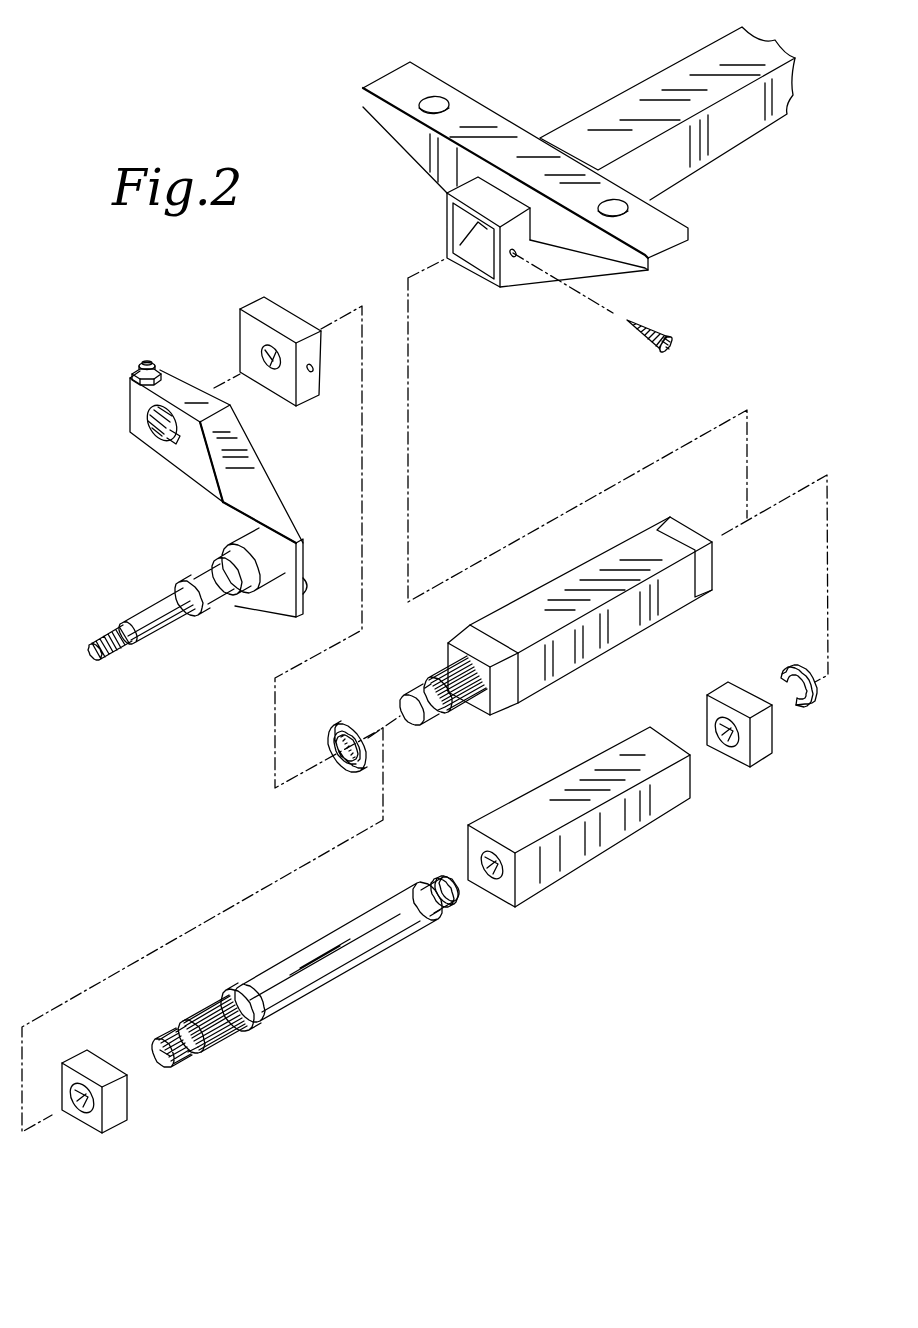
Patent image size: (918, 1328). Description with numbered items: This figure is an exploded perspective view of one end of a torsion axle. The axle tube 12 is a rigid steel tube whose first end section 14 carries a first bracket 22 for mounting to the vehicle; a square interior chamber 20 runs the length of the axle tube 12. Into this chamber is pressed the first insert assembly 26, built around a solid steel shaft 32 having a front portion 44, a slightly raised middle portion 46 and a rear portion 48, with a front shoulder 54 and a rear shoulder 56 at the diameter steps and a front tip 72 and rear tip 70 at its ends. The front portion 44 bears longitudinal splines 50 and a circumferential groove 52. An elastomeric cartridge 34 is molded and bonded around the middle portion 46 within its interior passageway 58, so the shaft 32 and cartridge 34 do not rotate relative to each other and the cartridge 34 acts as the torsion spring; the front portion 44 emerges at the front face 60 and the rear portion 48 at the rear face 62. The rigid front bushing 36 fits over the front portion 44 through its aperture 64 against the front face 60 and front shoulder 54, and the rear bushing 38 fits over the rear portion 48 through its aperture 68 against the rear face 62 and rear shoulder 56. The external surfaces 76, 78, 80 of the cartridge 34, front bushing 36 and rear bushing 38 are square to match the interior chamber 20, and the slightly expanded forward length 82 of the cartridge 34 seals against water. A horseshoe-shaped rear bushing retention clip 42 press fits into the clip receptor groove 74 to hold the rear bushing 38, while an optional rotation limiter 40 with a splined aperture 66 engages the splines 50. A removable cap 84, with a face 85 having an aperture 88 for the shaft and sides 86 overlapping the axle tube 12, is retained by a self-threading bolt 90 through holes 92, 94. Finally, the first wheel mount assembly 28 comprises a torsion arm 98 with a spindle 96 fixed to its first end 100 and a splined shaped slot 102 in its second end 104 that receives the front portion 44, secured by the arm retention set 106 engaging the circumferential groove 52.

The first end section 14 is at (203, 60).
The axle tube 12 is at (723, 138).
The first bracket 22 is at (417, 80).
The interior chamber 20 is at (455, 250).
The hole 94 is at (516, 260).
The self-threading bolt 90 is at (670, 335).
The cap 84 is at (259, 305).
The face 85 is at (238, 323).
The sides 86 is at (283, 313).
The aperture 88 is at (258, 354).
The hole 92 is at (310, 372).
The arm retention set 106 is at (146, 362).
The shaped slot 102 is at (150, 420).
The second end 104 is at (152, 430).
The first wheel mount assembly 28 is at (268, 500).
The torsion arm 98 is at (210, 493).
The spindle 96 is at (150, 620).
The first end 100 is at (292, 612).
The first insert assembly 26 is at (565, 595).
The rotation limiter 40 is at (345, 725).
The splined aperture 66 is at (340, 765).
The rear bushing retention clip 42 is at (795, 668).
The rear bushing 38 is at (720, 692).
The external surface 80 is at (762, 737).
The aperture 68 is at (726, 755).
The cartridge 34 is at (613, 833).
The forward length 82 is at (517, 812).
The external surface 76 is at (548, 793).
The rear face 62 is at (658, 728).
The front face 60 is at (472, 840).
The interior passageway 58 is at (497, 882).
The clip receptor groove 74 is at (452, 885).
The front bushing 36 is at (78, 1058).
The external surface 78 is at (112, 1115).
The aperture 64 is at (78, 1115).
The shaft 32 is at (360, 952).
The front tip 72 is at (162, 1068).
The front portion 44 is at (177, 1052).
The circumferential groove 52 is at (185, 1063).
The longitudinal splines 50 is at (195, 1057).
The front shoulder 54 is at (232, 993).
The middle portion 46 is at (340, 935).
The rear portion 48 is at (442, 886).
The rear tip 70 is at (452, 878).
The rear shoulder 56 is at (440, 925).